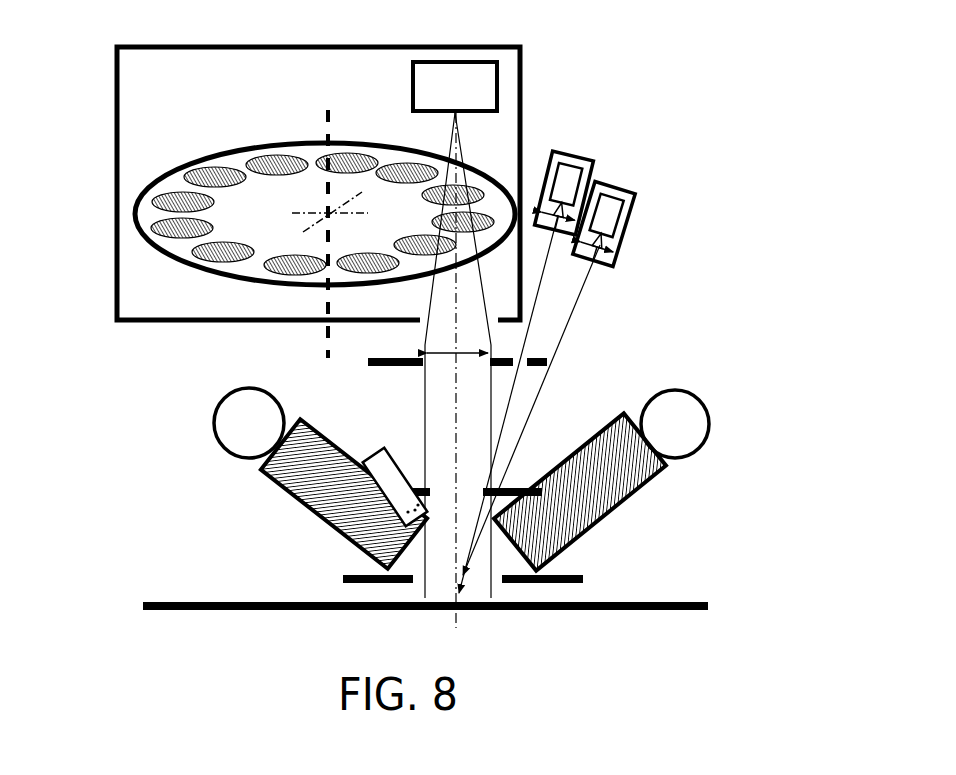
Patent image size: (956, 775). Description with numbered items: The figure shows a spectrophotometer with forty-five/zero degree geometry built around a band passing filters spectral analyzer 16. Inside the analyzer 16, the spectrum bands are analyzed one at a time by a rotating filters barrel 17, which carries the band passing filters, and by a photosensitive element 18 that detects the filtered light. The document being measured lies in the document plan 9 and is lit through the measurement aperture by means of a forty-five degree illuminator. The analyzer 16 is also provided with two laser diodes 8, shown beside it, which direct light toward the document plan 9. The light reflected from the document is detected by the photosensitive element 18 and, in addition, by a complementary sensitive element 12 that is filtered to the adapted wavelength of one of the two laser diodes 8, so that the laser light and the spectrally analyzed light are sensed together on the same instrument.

The laser diodes 8 is at (568, 188).
The document plan 9 is at (318, 600).
The complementary sensitive element 12 is at (395, 483).
The band passing filters spectral analyzer 16 is at (520, 114).
The rotating filters barrel 17 is at (283, 240).
The photosensitive element 18 is at (453, 85).